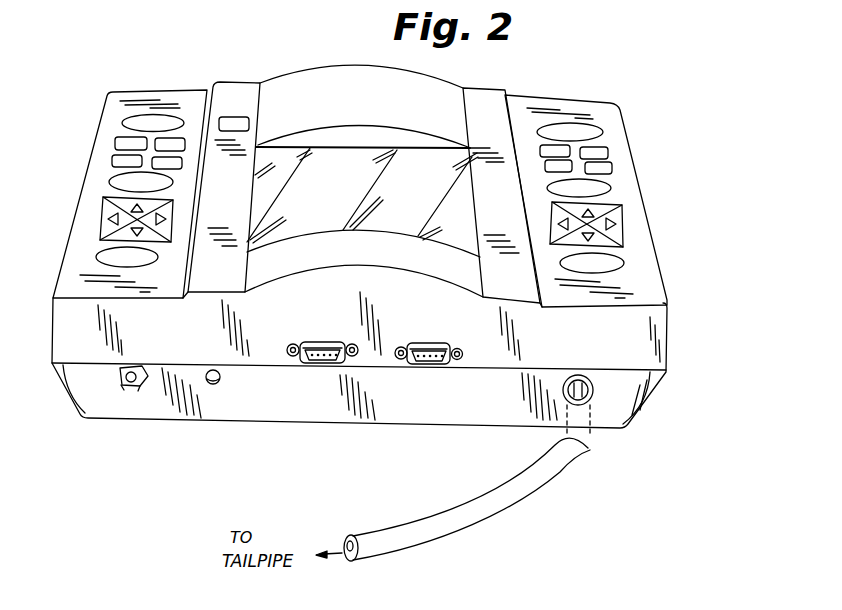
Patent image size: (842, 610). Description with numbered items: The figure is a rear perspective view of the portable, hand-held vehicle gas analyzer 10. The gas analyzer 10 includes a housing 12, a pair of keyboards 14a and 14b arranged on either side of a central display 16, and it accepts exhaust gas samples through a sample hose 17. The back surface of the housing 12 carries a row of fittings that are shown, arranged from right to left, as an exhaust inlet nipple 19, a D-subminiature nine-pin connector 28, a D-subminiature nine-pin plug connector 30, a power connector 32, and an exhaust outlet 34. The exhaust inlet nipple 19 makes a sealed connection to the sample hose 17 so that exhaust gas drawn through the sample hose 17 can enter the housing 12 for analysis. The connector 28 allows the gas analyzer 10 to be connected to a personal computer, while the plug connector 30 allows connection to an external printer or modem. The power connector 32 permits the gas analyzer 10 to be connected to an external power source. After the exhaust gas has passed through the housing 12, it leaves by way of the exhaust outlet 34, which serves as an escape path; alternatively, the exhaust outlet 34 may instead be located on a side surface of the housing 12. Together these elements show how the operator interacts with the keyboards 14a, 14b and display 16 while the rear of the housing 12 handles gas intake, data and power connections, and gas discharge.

The vehicle gas analyzer 10 is at (584, 73).
The housing 12 is at (422, 408).
The keyboard 14a is at (630, 210).
The keyboard 14b is at (102, 142).
The display 16 is at (392, 175).
The sample hose 17 is at (543, 490).
The exhaust inlet nipple 19 is at (597, 387).
The D-subminiature 9-pin connector 28 is at (430, 368).
The D-subminiature 9-pin plug connector 30 is at (320, 365).
The power connector 32 is at (213, 385).
The exhaust outlet 34 is at (118, 370).